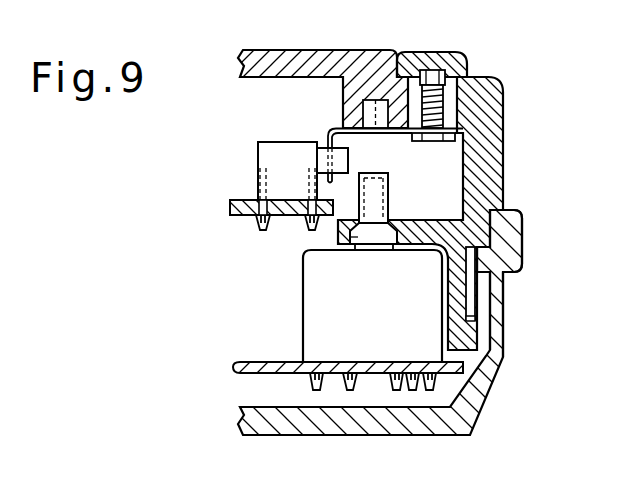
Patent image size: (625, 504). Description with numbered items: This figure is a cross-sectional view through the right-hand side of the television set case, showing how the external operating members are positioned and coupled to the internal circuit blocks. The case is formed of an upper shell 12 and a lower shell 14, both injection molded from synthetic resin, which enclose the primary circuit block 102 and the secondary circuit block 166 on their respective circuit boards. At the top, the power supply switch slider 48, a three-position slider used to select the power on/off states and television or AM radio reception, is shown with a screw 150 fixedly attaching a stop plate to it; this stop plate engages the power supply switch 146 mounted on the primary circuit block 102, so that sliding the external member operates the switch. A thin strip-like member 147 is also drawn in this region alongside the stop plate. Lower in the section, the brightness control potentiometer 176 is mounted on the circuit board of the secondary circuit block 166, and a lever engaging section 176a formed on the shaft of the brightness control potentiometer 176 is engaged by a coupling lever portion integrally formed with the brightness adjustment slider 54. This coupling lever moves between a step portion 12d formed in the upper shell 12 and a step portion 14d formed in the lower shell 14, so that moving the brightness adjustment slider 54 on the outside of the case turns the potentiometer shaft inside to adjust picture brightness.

The upper shell 12 is at (487, 128).
The step portion 12d is at (472, 308).
The lower shell 14 is at (383, 420).
The step portion 14d is at (497, 353).
The power supply switch slider 48 is at (458, 66).
The brightness adjustment slider 54 is at (503, 231).
The primary circuit block 102 is at (232, 207).
The power supply switch 146 is at (270, 174).
The bracket strip 147 is at (330, 132).
The screw 150 is at (427, 70).
The secondary circuit block 166 is at (233, 365).
The brightness control potentiometer 176 is at (318, 305).
The lever engaging section 176a is at (350, 239).